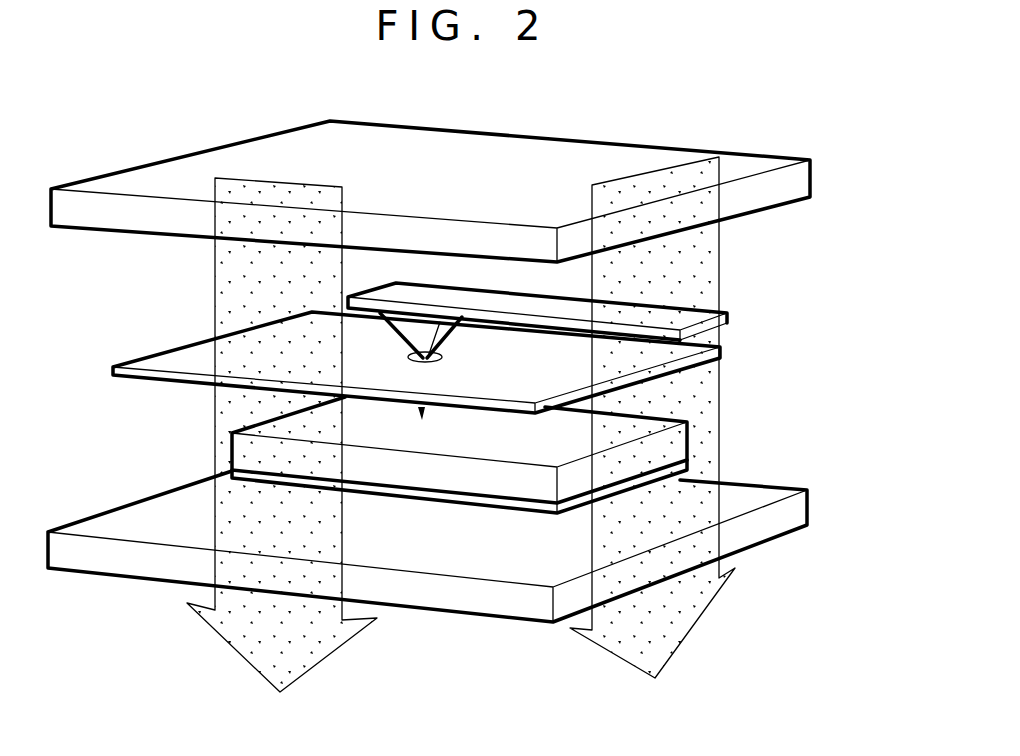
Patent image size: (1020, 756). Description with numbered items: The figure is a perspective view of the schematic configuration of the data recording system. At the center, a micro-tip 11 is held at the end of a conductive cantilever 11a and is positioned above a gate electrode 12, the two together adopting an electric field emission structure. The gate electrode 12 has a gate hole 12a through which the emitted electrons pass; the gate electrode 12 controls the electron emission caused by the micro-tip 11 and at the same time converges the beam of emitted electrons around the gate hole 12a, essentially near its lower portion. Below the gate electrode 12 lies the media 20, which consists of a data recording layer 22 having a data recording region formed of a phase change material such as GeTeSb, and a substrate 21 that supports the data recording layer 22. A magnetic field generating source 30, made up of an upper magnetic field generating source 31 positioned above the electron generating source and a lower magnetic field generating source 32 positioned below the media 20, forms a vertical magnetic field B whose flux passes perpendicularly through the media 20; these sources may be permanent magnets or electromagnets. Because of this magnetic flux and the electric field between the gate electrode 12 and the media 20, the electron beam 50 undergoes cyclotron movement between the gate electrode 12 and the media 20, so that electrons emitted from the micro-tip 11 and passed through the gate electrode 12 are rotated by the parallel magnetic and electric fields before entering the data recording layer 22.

The micro-tip 11 is at (447, 330).
The conductive cantilever 11a is at (731, 318).
The gate electrode 12 is at (160, 358).
The gate hole 12a is at (445, 356).
The electron beam 50 is at (424, 416).
The media 20 is at (459, 536).
The substrate 21 is at (436, 502).
The data recording layer 22 is at (407, 473).
The magnetic field generating source 30 is at (871, 210).
The upper magnetic field generating source 31 is at (813, 178).
The lower magnetic field generating source 32 is at (772, 532).
The vertical magnetic field B is at (220, 637).